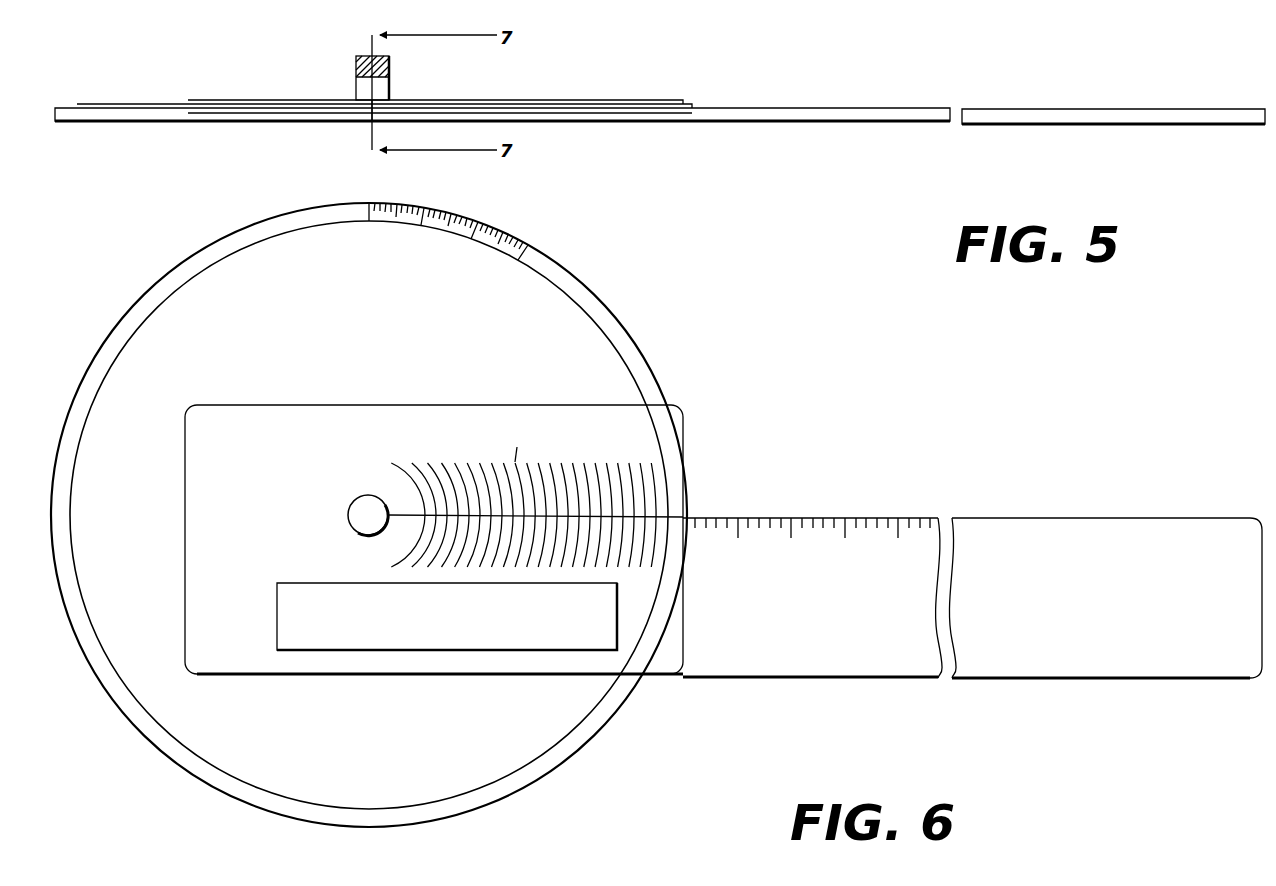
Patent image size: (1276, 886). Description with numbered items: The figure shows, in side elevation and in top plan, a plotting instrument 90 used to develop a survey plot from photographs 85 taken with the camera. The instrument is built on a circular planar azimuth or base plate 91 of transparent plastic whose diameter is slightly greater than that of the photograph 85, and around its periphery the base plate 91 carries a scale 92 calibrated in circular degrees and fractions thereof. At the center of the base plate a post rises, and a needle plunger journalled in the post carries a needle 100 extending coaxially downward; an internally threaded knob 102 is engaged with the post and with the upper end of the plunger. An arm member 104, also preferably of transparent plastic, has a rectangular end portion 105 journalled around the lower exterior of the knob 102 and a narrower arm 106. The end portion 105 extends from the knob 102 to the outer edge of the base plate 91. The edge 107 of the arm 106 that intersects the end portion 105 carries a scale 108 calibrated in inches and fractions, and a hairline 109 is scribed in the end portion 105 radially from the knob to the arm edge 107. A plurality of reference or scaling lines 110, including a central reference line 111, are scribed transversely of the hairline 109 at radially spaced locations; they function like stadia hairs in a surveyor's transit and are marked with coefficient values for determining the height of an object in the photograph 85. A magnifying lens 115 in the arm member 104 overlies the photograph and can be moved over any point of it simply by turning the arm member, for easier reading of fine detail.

In FIG. 5, the photograph 85 is at (592, 106).
In FIG. 6, the photograph 85 is at (558, 283).
In FIG. 5, the plotting instrument 90 is at (730, 60).
In FIG. 6, the plotting instrument 90 is at (788, 440).
In FIG. 5, the base plate 91 is at (650, 118).
In FIG. 6, the base plate 91 is at (615, 320).
In FIG. 6, the scale 92 is at (468, 227).
In FIG. 5, the needle 100 is at (380, 118).
In FIG. 5, the knob 102 is at (393, 60).
In FIG. 6, the knob 102 is at (347, 516).
In FIG. 5, the arm member 104 is at (818, 80).
In FIG. 6, the arm member 104 is at (841, 544).
In FIG. 5, the rectangular end portion 105 is at (528, 101).
In FIG. 6, the rectangular end portion 105 is at (278, 413).
In FIG. 5, the arm 106 is at (922, 108).
In FIG. 6, the edge of arm 107 is at (1032, 493).
In FIG. 6, the scale 108 is at (797, 518).
In FIG. 6, the hairline 109 is at (684, 500).
In FIG. 6, the reference or scaling lines 110 is at (546, 462).
In FIG. 6, the central reference or scaling line 111 is at (518, 583).
In FIG. 6, the magnifying lens 115 is at (322, 595).